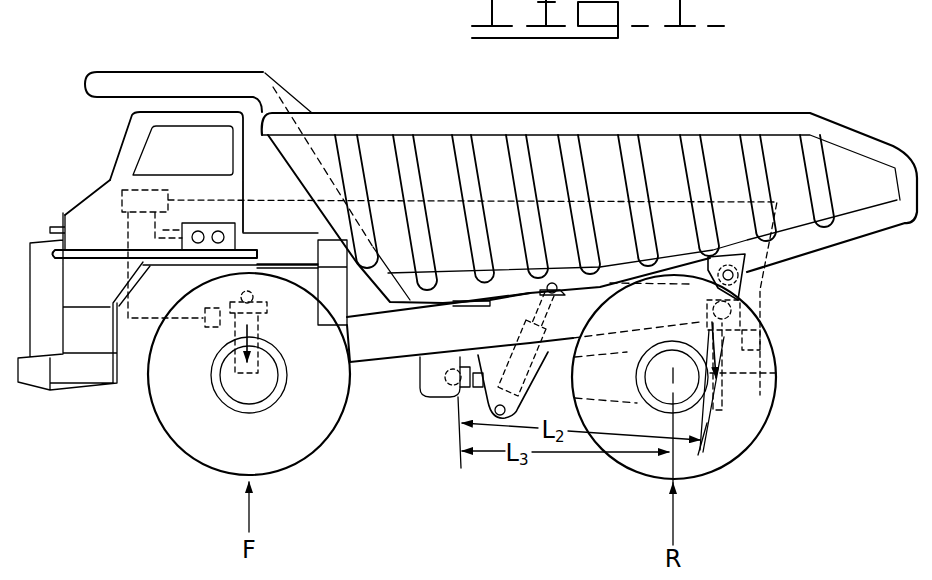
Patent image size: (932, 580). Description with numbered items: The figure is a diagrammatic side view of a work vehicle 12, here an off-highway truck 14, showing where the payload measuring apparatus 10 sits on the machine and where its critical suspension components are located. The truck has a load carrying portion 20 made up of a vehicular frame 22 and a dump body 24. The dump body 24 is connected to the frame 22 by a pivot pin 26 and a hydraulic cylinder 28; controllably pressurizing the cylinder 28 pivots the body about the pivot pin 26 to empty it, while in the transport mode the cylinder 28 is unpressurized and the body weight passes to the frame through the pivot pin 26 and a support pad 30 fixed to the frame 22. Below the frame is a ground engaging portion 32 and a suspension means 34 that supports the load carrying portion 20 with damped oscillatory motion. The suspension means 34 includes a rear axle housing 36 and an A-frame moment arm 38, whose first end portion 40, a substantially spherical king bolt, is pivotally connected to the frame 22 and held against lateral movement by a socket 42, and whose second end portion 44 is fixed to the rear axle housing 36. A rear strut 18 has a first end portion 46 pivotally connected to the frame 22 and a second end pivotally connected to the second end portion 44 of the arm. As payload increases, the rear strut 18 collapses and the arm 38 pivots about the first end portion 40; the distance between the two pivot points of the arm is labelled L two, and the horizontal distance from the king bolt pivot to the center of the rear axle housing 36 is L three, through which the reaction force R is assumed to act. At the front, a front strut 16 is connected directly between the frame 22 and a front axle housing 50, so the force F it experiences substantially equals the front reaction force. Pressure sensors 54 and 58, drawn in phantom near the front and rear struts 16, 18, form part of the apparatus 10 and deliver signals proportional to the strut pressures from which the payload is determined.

The apparatus 10 is at (118, 183).
The work vehicle 12 is at (336, 68).
The off-highway truck 14 is at (195, 162).
The front strut 16 is at (263, 333).
The rear strut 18 is at (777, 373).
The load carrying portion 20 is at (697, 103).
The vehicular frame 22 is at (392, 345).
The dump body 24 is at (562, 186).
The pivot pin 26 is at (740, 281).
The hydraulic cylinder 28 is at (540, 353).
The support pad 30 is at (498, 303).
The ground engaging portion 32 is at (611, 477).
The suspension means 34 is at (622, 410).
The rear axle housing 36 is at (667, 377).
The A-frame moment arm 38 is at (540, 392).
The first end portion 40 is at (455, 410).
The socket 42 is at (430, 374).
The second end portion 44 is at (712, 423).
The first end portion 46 is at (750, 313).
The front axle housing 50 is at (243, 388).
The pressure sensor 54 is at (217, 327).
The pressure sensor 58 is at (765, 343).